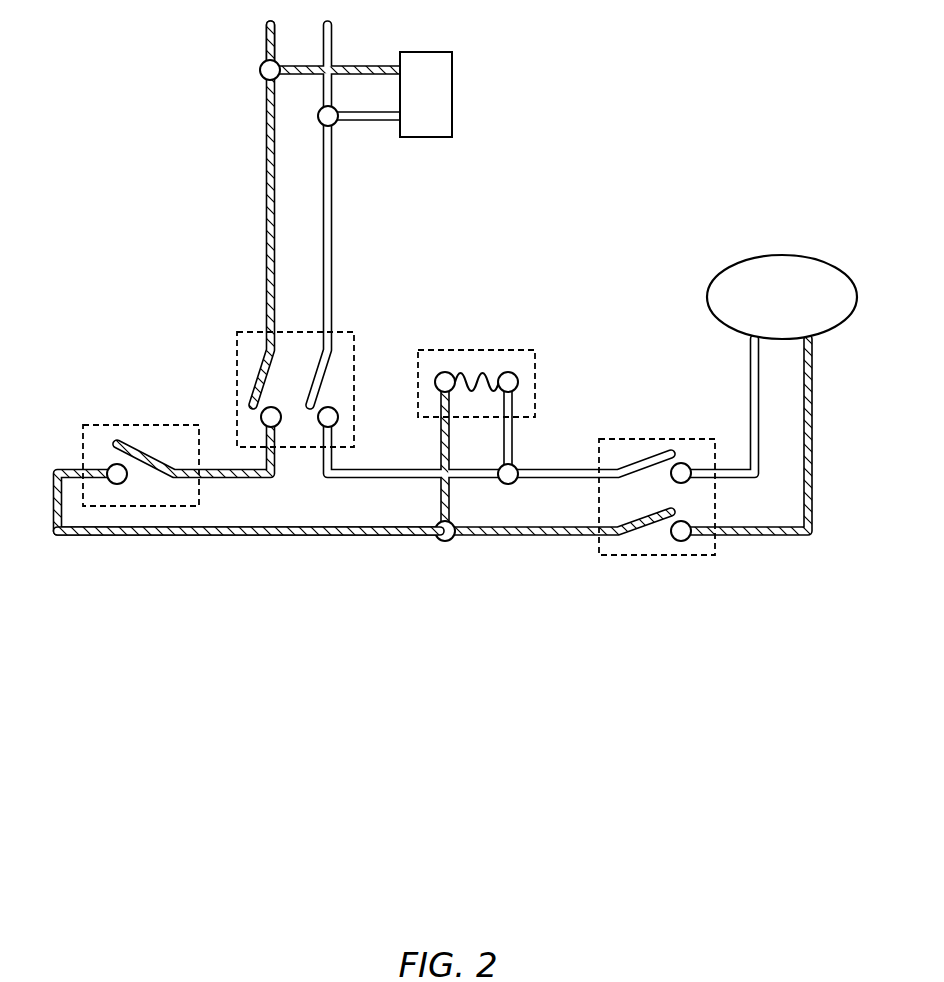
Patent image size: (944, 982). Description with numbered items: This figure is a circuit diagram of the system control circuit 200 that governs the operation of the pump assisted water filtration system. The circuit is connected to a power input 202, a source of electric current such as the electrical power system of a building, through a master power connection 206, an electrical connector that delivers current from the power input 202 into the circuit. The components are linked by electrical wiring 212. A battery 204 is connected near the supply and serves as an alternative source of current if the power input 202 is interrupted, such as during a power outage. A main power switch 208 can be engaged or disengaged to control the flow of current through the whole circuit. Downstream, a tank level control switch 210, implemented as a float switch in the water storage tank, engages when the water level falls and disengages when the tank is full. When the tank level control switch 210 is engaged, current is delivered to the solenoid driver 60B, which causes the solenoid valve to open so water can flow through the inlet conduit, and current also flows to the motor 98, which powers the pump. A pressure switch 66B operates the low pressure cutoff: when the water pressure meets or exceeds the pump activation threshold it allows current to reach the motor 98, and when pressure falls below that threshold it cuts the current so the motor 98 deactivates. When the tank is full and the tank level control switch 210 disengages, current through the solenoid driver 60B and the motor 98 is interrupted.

The system control circuit 200 is at (298, 597).
The power input 202 is at (265, 47).
The battery 204 is at (452, 90).
The master power connection 206 is at (262, 77).
The main power switch 208 is at (354, 333).
The tank level control switch 210 is at (180, 425).
The electrical wiring 212 is at (201, 537).
The solenoid driver 60B is at (535, 372).
The pressure switch 66B is at (657, 556).
The motor 98 is at (807, 254).